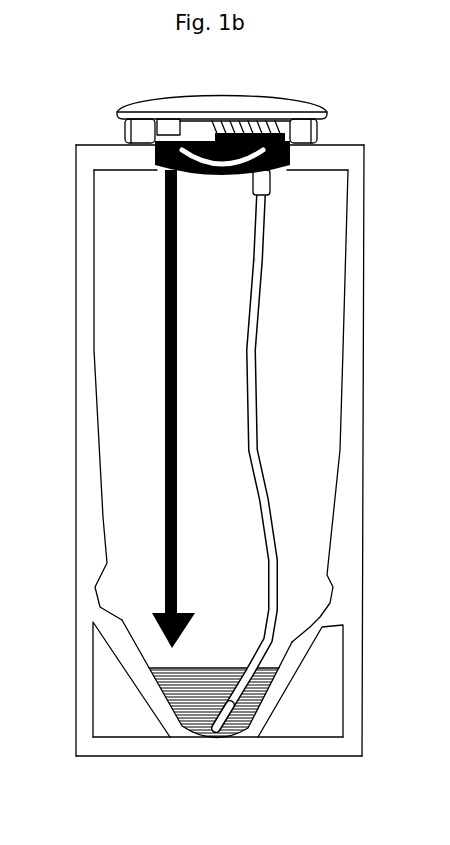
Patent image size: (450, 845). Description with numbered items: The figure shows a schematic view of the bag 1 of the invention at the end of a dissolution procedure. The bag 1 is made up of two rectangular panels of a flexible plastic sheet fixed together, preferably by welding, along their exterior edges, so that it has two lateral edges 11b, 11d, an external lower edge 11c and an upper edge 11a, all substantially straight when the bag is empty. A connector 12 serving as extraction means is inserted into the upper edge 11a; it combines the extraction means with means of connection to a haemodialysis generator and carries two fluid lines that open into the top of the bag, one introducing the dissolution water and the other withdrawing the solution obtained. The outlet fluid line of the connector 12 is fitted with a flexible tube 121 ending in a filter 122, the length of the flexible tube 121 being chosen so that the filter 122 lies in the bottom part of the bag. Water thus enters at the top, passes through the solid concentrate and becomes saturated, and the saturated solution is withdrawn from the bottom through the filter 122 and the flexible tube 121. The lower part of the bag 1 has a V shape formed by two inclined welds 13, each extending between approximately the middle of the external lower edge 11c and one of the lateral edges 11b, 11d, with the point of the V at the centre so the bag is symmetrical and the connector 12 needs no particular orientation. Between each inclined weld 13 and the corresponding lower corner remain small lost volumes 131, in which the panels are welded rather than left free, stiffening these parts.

The bag 1 is at (88, 90).
The upper edge 11a is at (231, 129).
The lateral edge 11b is at (69, 450).
The external lower edge 11c is at (219, 786).
The lateral edge 11d is at (359, 450).
The connector 12 is at (222, 109).
The flexible tube 121 is at (147, 449).
The filter 122 is at (157, 759).
The inclined weld 13 is at (198, 714).
The lost volume 131 is at (345, 657).